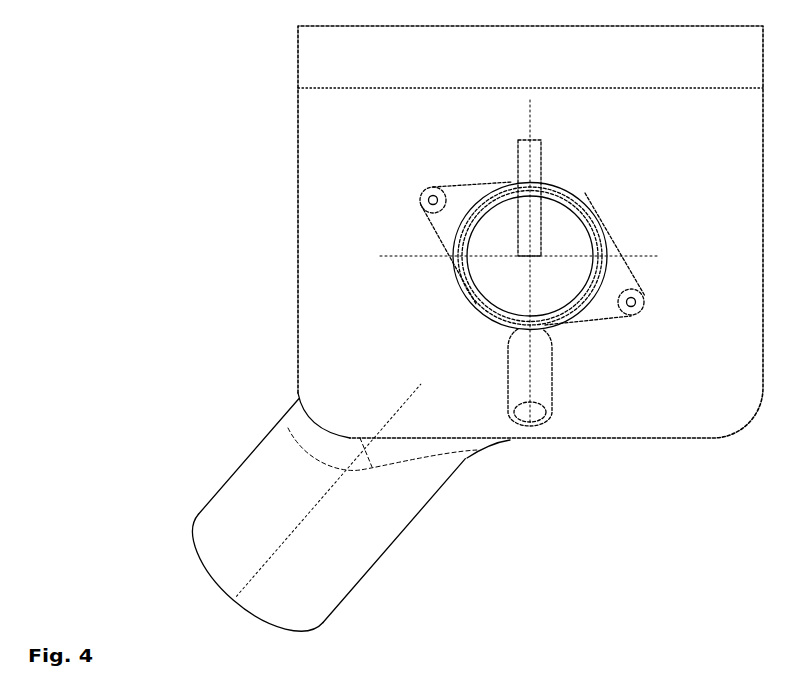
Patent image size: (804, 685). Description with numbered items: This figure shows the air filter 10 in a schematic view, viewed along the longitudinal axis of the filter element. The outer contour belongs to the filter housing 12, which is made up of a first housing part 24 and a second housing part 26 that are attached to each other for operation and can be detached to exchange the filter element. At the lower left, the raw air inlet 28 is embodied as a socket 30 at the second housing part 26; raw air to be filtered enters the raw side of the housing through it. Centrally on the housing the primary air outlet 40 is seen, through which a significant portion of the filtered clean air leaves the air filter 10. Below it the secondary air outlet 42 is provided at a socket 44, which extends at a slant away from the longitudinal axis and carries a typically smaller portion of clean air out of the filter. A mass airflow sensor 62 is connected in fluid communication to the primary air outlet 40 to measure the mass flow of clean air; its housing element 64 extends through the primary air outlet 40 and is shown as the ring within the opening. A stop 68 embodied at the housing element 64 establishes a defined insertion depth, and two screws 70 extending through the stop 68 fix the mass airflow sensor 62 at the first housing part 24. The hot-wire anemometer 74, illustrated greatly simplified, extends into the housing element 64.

The air filter 10 is at (147, 141).
The filter housing 12 is at (220, 337).
The first housing part 24 is at (313, 313).
The second housing part 26 is at (303, 427).
The raw air inlet 28 is at (232, 600).
The socket 30 is at (232, 482).
The primary air outlet 40 is at (573, 268).
The secondary air outlet 42 is at (533, 420).
The socket 44 is at (543, 386).
The mass airflow sensor 62 is at (540, 215).
The housing element 64 is at (470, 298).
The stop 68 is at (468, 192).
The screws 70 is at (425, 199).
The hot-wire anemometer 74 is at (535, 227).